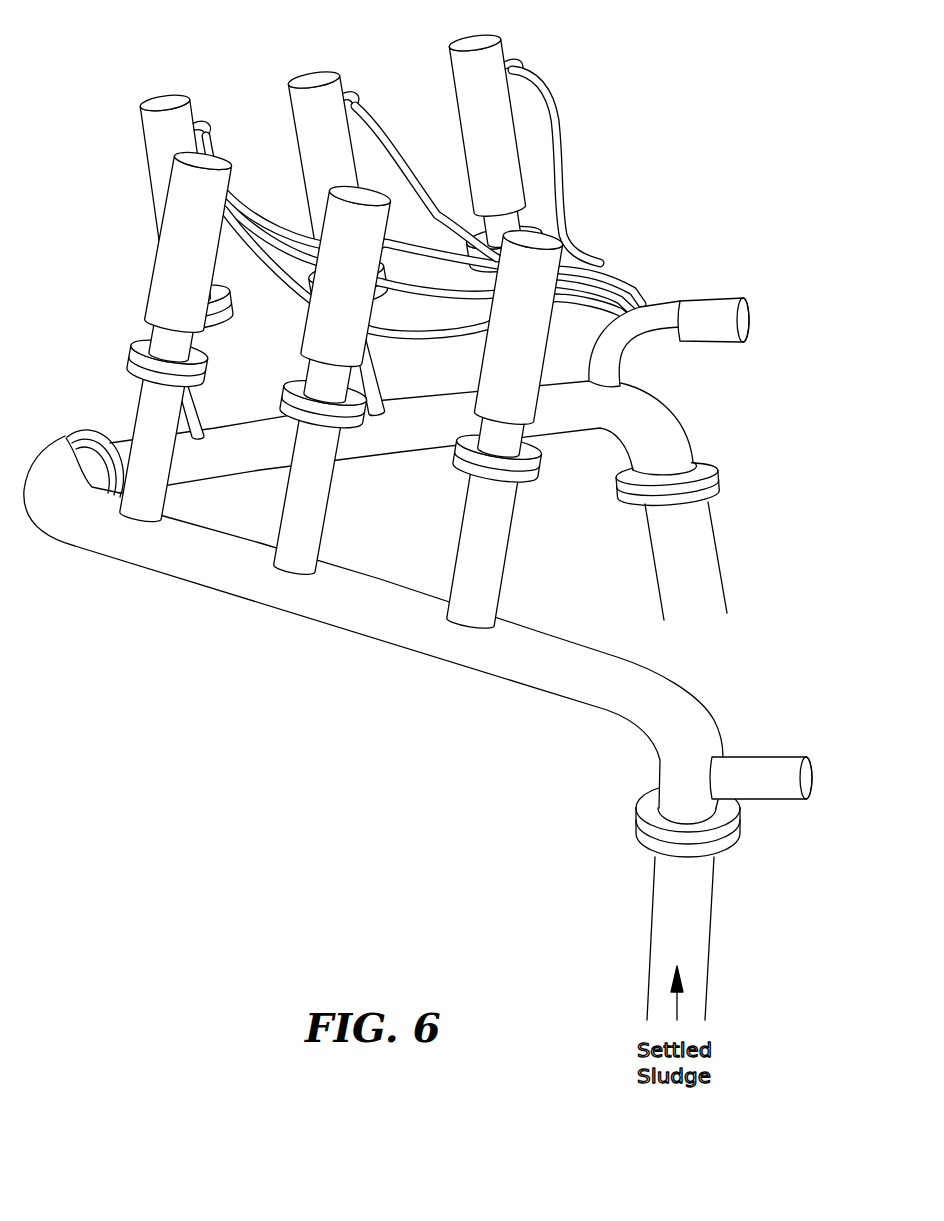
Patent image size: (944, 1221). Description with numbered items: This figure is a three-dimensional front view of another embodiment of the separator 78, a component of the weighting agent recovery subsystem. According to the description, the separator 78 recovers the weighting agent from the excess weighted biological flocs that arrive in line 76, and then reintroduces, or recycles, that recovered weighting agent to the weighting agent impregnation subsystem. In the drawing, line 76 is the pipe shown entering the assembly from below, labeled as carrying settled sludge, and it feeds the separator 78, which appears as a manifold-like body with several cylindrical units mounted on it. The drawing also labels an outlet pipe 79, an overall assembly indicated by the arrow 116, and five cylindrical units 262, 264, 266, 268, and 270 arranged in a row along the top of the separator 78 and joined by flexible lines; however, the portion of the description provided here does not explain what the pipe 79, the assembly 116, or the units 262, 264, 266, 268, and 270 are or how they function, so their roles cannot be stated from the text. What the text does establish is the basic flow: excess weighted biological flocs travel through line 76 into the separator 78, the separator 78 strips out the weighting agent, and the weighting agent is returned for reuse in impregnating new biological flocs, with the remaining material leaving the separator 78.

The separator 78 is at (99, 63).
The sensor assembly 116 is at (670, 210).
The sensor 262 is at (538, 361).
The sensor 264 is at (365, 315).
The sensor 266 is at (208, 265).
The sensor 268 is at (345, 145).
The sensor 270 is at (508, 123).
The outlet pipe 79 is at (687, 537).
The line 76 is at (658, 897).